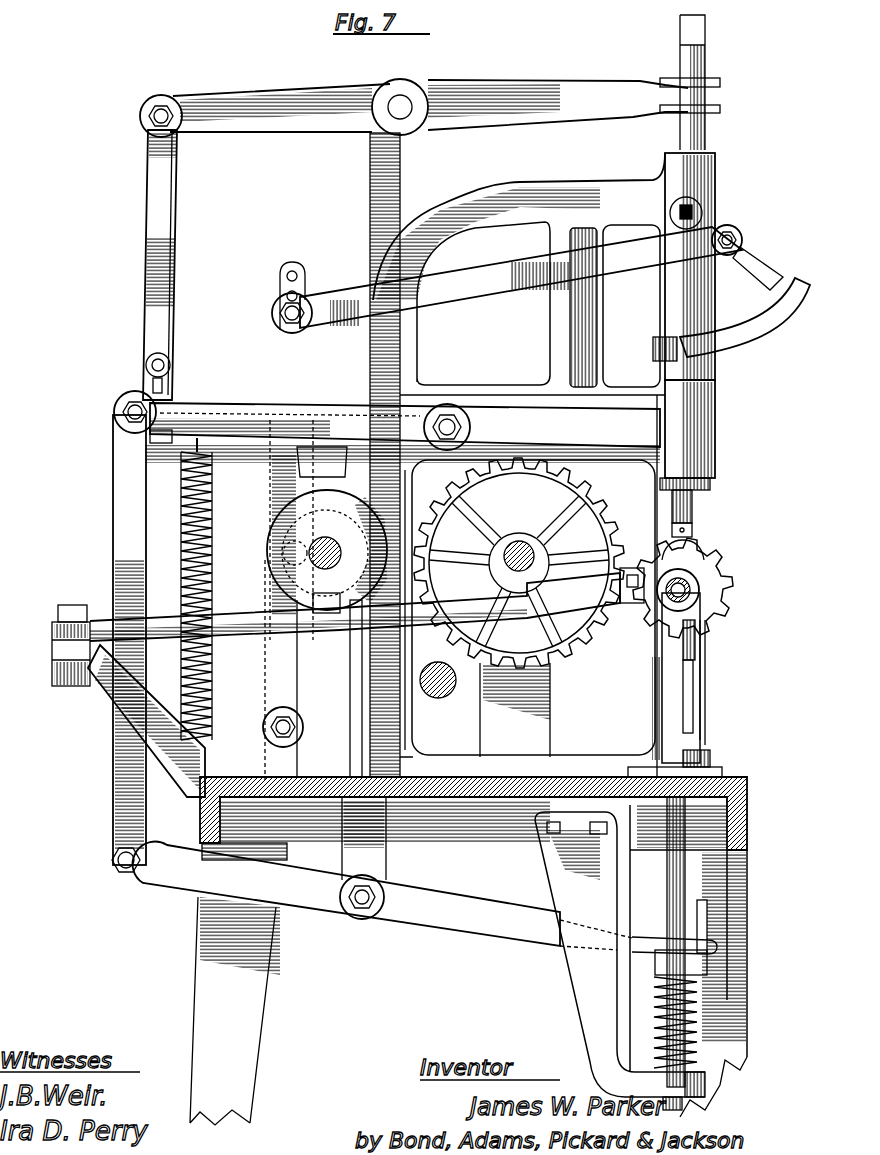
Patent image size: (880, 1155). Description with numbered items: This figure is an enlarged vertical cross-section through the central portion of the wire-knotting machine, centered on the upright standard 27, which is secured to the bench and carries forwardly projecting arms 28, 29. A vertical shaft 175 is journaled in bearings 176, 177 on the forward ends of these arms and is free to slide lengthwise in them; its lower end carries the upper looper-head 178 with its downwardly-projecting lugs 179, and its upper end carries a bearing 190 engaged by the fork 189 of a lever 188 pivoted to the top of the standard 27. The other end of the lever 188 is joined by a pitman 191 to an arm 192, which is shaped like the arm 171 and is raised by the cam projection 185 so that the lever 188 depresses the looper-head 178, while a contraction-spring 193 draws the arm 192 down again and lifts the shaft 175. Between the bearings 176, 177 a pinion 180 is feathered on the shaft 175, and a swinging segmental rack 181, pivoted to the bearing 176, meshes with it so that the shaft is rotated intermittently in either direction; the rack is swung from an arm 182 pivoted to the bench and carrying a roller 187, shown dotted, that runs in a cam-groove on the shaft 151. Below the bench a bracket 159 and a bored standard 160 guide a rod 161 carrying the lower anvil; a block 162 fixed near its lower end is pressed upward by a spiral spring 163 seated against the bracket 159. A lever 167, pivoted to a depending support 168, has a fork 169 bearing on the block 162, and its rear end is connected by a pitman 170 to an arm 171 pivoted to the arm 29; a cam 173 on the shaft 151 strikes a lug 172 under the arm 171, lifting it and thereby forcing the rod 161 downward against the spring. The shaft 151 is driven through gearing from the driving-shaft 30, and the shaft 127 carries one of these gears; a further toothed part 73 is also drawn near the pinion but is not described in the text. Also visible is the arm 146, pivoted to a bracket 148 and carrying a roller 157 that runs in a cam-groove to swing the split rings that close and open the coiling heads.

The standard 27 is at (383, 270).
The arm 28 is at (578, 200).
The arm 29 is at (533, 590).
The driving-shaft 30 is at (437, 698).
The pinion 73 is at (735, 610).
The shaft 127 is at (500, 548).
The arm 146 is at (348, 627).
The bracket 148 is at (135, 730).
The shaft 151 is at (335, 535).
The roller 157 is at (327, 597).
The bracket 159 is at (620, 957).
The standard 160 is at (703, 750).
The rod 161 is at (735, 840).
The block 162 is at (681, 962).
The spiral spring 163 is at (690, 1022).
The lever 167 is at (346, 894).
The support 168 is at (364, 838).
The fork 169 is at (652, 936).
The pitman 170 is at (115, 778).
The arm 171 is at (402, 433).
The lug 172 is at (322, 462).
The cam 173 is at (327, 547).
The shaft 175 is at (702, 510).
The bearing 176 is at (718, 175).
The bearing 177 is at (718, 438).
The upper looper-head 178 is at (700, 548).
The lugs 179 is at (736, 566).
The pinion 180 is at (653, 350).
The swinging segmental rack 181 is at (762, 272).
The arm 182 is at (285, 707).
The cam projection 185 is at (507, 279).
The roller 187 is at (280, 548).
The lever 188 is at (485, 97).
The fork 189 is at (675, 95).
The bearing 190 is at (722, 82).
The pitman 191 is at (170, 235).
The arm 192 is at (172, 442).
The contraction-spring 193 is at (210, 580).